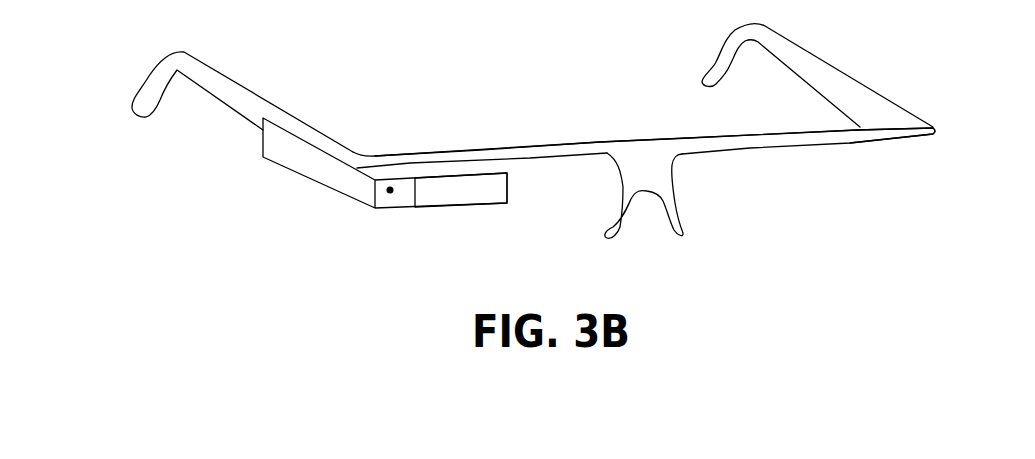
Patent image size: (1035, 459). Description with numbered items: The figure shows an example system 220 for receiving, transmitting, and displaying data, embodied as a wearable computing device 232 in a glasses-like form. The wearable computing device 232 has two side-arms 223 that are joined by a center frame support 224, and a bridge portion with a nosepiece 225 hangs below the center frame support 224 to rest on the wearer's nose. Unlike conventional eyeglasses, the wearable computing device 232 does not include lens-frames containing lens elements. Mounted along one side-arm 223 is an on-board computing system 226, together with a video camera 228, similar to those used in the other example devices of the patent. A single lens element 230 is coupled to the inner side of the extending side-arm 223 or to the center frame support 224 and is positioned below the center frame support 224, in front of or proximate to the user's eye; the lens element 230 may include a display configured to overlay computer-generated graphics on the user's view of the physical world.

The system 220 is at (908, 61).
The side-arms 223 is at (228, 92).
The center frame support 224 is at (548, 150).
The nosepiece 225 is at (675, 198).
The on-board computing system 226 is at (297, 173).
The video camera 228 is at (389, 193).
The single lens element 230 is at (467, 207).
The wearable computing device 232 is at (924, 181).